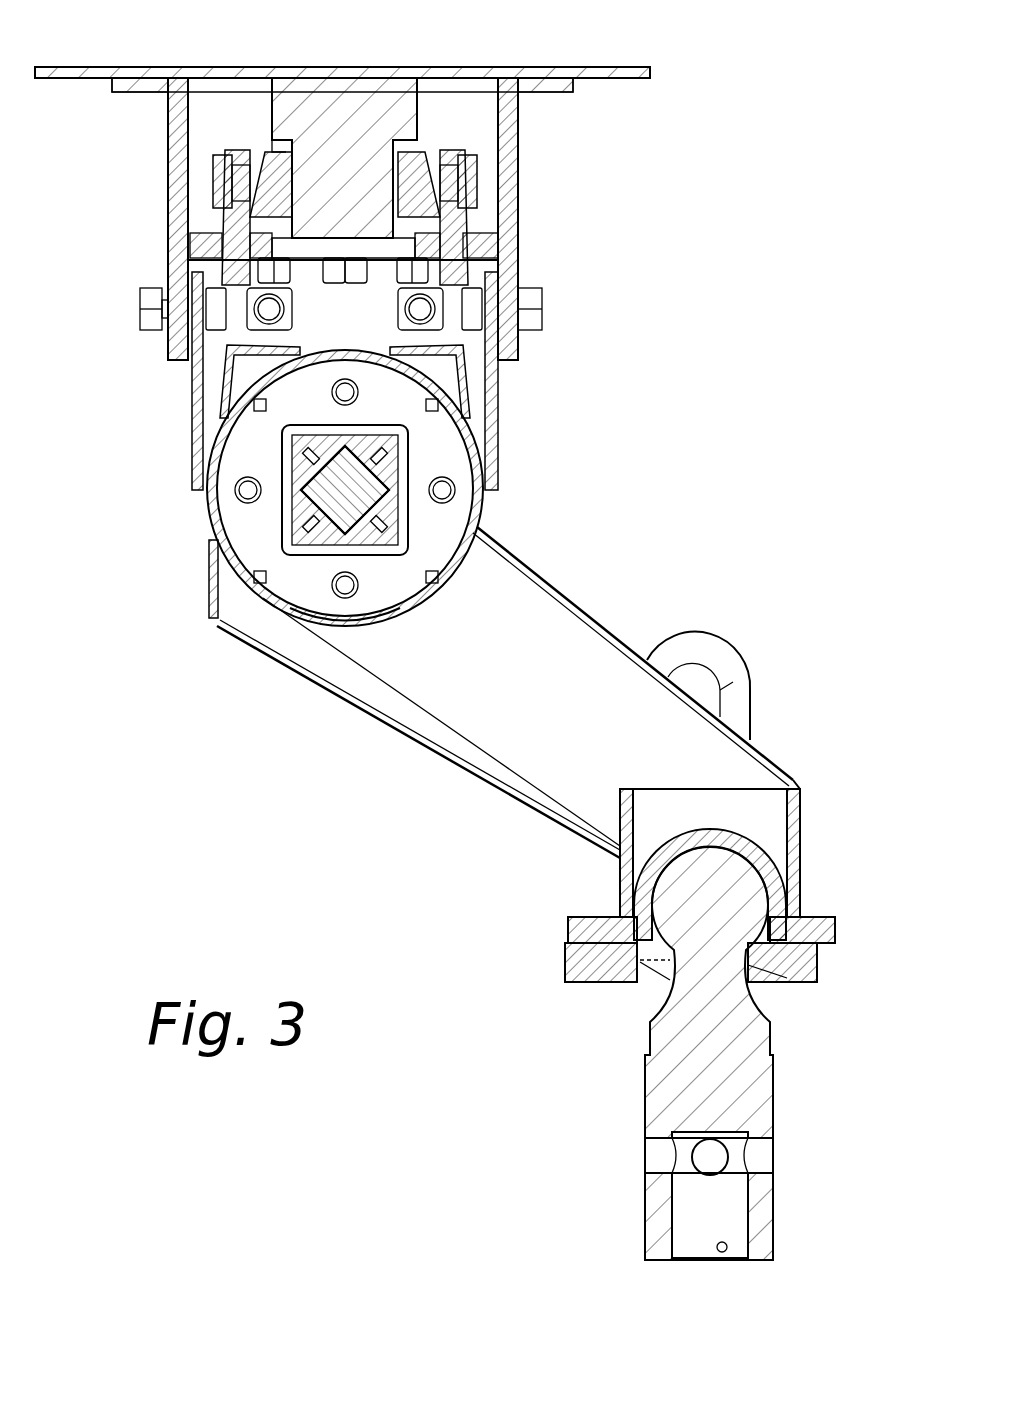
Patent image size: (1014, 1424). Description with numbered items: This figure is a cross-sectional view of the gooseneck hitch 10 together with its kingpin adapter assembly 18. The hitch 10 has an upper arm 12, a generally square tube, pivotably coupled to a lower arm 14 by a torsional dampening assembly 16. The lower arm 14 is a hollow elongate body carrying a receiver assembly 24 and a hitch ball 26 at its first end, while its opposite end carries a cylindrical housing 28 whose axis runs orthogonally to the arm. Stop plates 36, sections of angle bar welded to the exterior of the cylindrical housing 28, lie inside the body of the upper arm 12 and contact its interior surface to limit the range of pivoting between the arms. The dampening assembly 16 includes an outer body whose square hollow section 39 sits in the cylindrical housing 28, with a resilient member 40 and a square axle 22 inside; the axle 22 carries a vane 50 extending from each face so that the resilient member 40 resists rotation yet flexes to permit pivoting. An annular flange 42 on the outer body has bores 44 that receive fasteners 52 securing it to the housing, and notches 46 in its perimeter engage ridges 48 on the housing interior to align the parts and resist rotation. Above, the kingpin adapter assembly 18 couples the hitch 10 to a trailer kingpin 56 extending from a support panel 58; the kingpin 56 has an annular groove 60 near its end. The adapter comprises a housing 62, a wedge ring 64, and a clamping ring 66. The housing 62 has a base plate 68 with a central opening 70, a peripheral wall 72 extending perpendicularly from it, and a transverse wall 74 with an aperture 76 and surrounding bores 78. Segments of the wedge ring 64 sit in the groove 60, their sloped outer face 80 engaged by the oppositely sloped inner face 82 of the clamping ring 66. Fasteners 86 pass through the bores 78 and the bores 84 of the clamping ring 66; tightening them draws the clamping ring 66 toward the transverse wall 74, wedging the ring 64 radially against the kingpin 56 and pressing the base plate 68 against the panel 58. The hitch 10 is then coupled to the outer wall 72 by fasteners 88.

The gooseneck hitch 10 is at (478, 630).
The upper arm 12 is at (490, 417).
The lower arm 14 is at (603, 620).
The torsional dampening assembly 16 is at (326, 496).
The kingpin adapter assembly 18 is at (359, 180).
The axle 22 is at (305, 468).
The receiver assembly 24 is at (743, 1024).
The hitch ball 26 is at (773, 1038).
The cylindrical housing 28 is at (270, 608).
The stop plates 36 is at (223, 368).
The hollow section 39 is at (412, 450).
The resilient member 40 is at (313, 533).
The annular flange 42 is at (465, 562).
The bores 44 is at (435, 548).
The notches 46 is at (330, 612).
The ridges 48 is at (347, 360).
The vane 50 is at (372, 445).
The fasteners 52 is at (442, 490).
The kingpin 56 is at (420, 112).
The support panel 58 is at (628, 65).
The annular groove 60 is at (275, 168).
The housing 62 is at (518, 248).
The wedge ring 64 is at (255, 220).
The clamping ring 66 is at (470, 193).
The base plate 68 is at (563, 95).
The opening 70 is at (485, 82).
The peripheral wall 72 is at (168, 105).
The transverse wall 74 is at (207, 233).
The aperture 76 is at (275, 262).
The bores 78 is at (258, 235).
The outer face 80 is at (263, 190).
The inner face 82 is at (300, 160).
The bores 84 is at (213, 167).
The fasteners 86 is at (447, 147).
The fasteners 88 is at (140, 316).